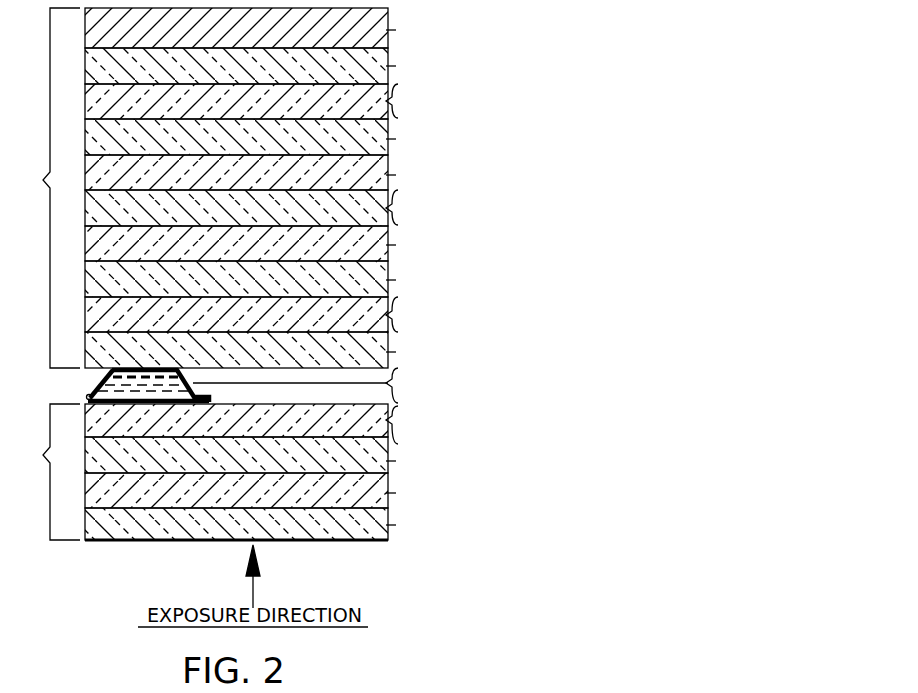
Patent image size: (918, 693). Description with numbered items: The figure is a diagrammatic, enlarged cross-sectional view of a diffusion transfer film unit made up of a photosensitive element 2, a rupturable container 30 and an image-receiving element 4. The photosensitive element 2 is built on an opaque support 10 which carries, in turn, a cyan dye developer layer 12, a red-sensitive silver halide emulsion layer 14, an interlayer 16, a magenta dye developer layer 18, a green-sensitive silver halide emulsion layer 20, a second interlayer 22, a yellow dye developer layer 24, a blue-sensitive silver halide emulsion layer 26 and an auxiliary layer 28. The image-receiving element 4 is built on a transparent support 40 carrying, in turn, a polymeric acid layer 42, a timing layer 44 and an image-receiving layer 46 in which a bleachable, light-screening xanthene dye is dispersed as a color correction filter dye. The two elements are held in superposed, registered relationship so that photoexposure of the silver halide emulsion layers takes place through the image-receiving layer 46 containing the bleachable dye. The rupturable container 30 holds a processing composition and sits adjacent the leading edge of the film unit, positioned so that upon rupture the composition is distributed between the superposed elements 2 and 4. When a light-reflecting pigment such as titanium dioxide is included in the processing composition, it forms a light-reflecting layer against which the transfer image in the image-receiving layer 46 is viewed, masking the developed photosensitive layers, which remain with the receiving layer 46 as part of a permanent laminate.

The photosensitive element 2 is at (52, 188).
The image-receiving element 4 is at (52, 472).
The opaque support 10 is at (108, 30).
The cyan dye developer layer 12 is at (108, 66).
The red-sensitive silver halide emulsion layer 14 is at (108, 101).
The interlayer 16 is at (108, 137).
The magenta dye developer layer 18 is at (108, 172).
The green-sensitive silver halide emulsion layer 20 is at (108, 208).
The interlayer 22 is at (108, 243).
The yellow dye developer layer 24 is at (108, 279).
The blue-sensitive silver halide emulsion layer 26 is at (108, 314).
The auxiliary layer 28 is at (108, 350).
The rupturable container 30 is at (100, 383).
The image-receiving layer 46 is at (108, 420).
The timing layer 44 is at (108, 455).
The polymeric acid layer 42 is at (108, 490).
The transparent support 40 is at (108, 524).